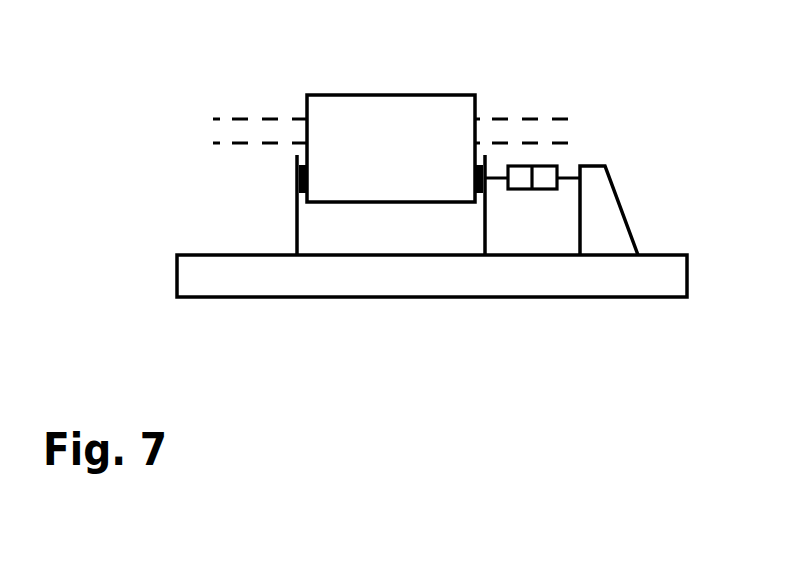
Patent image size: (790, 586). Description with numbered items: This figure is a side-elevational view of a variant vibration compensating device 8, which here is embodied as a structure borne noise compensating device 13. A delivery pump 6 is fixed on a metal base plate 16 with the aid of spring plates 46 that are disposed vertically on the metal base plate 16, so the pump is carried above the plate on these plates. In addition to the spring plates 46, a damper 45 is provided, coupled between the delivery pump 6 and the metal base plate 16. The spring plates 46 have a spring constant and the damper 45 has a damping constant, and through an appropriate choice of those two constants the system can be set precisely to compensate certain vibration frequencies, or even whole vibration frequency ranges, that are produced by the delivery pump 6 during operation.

The delivery pump 6 is at (439, 95).
The vibration compensating device 8 is at (297, 227).
The structure borne noise compensating device 13 is at (300, 232).
The metal base plate 16 is at (593, 297).
The damper 45 is at (558, 166).
The spring plates 46 is at (297, 227).